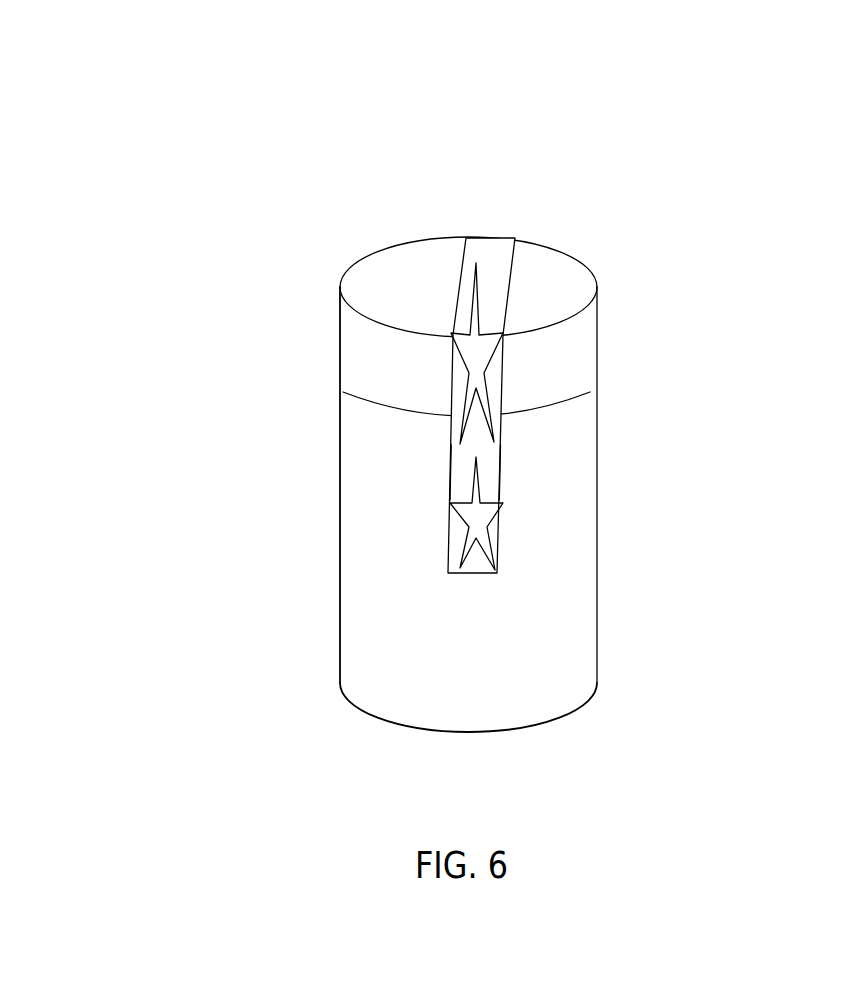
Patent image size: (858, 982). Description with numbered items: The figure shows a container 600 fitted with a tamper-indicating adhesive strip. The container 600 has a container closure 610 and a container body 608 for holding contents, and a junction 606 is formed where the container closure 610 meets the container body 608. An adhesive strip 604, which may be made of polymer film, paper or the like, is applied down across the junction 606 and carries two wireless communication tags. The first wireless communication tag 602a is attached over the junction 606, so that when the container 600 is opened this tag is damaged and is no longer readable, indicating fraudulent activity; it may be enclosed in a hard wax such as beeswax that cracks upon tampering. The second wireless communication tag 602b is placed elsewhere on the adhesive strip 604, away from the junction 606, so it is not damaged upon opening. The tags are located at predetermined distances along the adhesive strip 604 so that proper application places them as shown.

The container 600 is at (482, 397).
The first wireless communication tag 602a is at (465, 377).
The second wireless communication tag 602b is at (466, 530).
The adhesive strip 604 is at (455, 458).
The junction 606 is at (575, 398).
The container body 608 is at (593, 606).
The container closure 610 is at (563, 253).